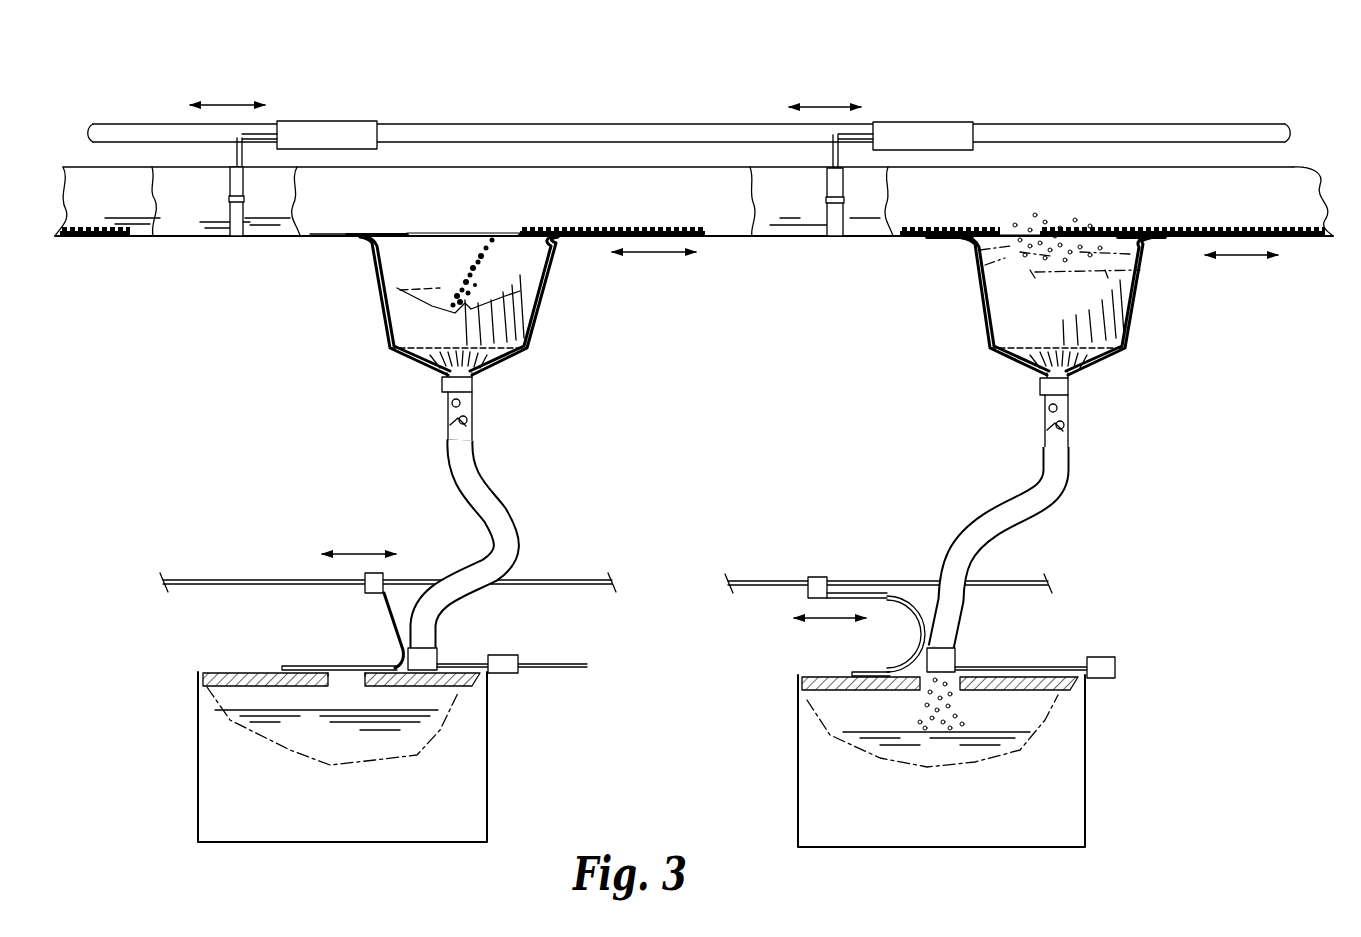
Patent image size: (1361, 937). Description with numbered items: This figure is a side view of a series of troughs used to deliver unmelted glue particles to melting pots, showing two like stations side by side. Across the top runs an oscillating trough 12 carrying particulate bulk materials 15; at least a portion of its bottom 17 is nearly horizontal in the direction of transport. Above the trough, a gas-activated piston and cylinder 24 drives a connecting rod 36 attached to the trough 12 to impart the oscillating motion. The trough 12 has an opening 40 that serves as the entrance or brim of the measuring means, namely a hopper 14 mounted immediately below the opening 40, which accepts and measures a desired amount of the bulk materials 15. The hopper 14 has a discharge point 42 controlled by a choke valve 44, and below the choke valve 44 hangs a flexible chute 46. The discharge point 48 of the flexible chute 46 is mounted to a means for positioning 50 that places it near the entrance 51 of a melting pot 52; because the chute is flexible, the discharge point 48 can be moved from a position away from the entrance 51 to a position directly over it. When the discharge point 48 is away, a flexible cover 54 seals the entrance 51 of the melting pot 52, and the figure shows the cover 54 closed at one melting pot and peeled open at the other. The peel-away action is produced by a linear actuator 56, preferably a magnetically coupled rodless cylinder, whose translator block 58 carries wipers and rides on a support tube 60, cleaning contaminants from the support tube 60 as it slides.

The oscillating trough 12 is at (857, 237).
The hopper 14 is at (533, 333).
The bulk materials 15 is at (495, 237).
The bottom 17 is at (323, 237).
The piston and cylinder 24 is at (325, 120).
The connecting rod 36 is at (260, 132).
The opening 40 is at (407, 232).
The discharge point 42 is at (445, 373).
The choke valve 44 is at (473, 388).
The flexible chute 46 is at (462, 493).
The discharge point 48 is at (438, 660).
The means for positioning 50 is at (510, 674).
The entrance 51 is at (363, 683).
The melting pot 52 is at (432, 813).
The cover 54 is at (388, 667).
The linear actuator 56 is at (364, 592).
The translator block 58 is at (385, 574).
The support tube 60 is at (288, 580).